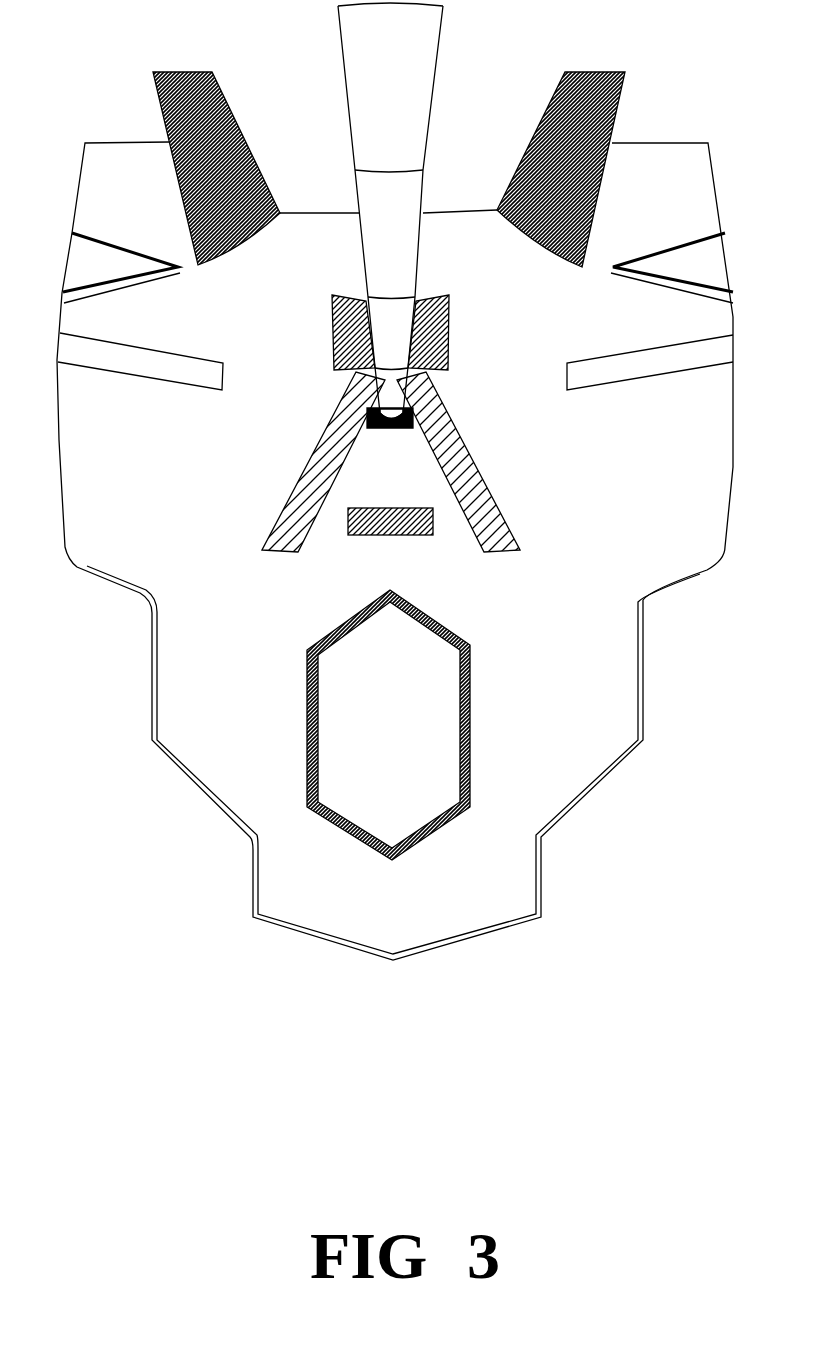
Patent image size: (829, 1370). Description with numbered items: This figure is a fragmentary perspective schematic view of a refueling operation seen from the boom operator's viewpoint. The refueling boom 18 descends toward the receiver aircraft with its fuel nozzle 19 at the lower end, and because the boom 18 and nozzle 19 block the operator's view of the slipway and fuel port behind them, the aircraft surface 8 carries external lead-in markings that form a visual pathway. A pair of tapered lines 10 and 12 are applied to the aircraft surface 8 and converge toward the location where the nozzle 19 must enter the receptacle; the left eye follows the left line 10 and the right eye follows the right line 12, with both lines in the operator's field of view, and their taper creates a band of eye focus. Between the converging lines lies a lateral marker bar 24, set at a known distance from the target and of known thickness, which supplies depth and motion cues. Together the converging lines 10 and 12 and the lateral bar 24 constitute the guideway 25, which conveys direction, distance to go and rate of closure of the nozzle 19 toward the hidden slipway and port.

The aircraft surface 8 is at (192, 662).
The tapered lead-in line 10 is at (275, 518).
The tapered lead-in line 12 is at (493, 510).
The refueling boom 18 is at (454, 264).
The boom nozzle 19 is at (395, 389).
The marker bar 24 is at (410, 537).
The guideway 25 is at (272, 425).